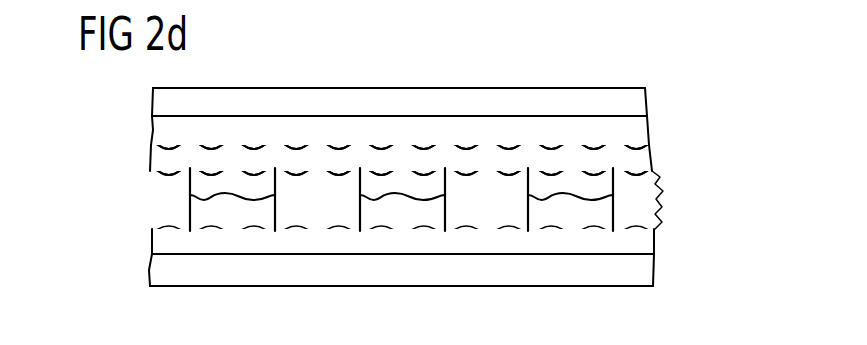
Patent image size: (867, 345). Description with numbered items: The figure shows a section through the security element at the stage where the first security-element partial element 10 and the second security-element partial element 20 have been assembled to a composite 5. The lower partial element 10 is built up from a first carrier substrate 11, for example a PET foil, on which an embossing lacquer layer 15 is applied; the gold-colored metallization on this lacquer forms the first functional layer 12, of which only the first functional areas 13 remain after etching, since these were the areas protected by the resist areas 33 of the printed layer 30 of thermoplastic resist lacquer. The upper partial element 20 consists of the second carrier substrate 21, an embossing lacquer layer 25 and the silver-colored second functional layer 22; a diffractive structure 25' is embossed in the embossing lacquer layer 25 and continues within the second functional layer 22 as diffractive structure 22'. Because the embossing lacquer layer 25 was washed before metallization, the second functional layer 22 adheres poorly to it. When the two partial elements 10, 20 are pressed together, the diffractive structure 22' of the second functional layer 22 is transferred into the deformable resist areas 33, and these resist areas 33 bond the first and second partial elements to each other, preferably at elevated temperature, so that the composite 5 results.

The composite 5 is at (717, 83).
The second security-element partial element 20 is at (128, 88).
The second carrier substrate 21 is at (644, 99).
The embossing lacquer layer 25 is at (424, 127).
The diffractive structure 25' is at (403, 95).
The second functional layer 22 is at (424, 157).
The diffractive structure 22' is at (403, 108).
The layer of thermoplastic resist lacquer 30 is at (416, 248).
The first functional layer 12 is at (423, 216).
The resist areas 33 is at (197, 182).
The first functional areas 13 is at (250, 215).
The first security-element partial element 10 is at (128, 193).
The embossing lacquer layer 15 is at (644, 238).
The first carrier substrate 11 is at (644, 268).